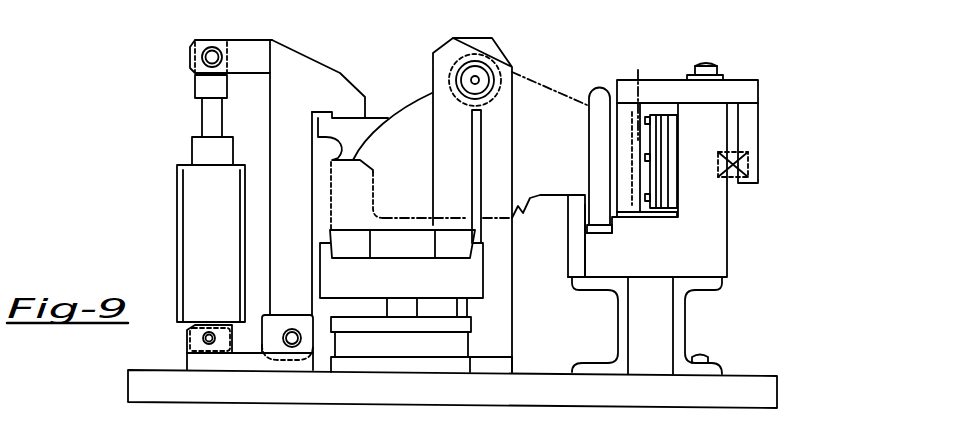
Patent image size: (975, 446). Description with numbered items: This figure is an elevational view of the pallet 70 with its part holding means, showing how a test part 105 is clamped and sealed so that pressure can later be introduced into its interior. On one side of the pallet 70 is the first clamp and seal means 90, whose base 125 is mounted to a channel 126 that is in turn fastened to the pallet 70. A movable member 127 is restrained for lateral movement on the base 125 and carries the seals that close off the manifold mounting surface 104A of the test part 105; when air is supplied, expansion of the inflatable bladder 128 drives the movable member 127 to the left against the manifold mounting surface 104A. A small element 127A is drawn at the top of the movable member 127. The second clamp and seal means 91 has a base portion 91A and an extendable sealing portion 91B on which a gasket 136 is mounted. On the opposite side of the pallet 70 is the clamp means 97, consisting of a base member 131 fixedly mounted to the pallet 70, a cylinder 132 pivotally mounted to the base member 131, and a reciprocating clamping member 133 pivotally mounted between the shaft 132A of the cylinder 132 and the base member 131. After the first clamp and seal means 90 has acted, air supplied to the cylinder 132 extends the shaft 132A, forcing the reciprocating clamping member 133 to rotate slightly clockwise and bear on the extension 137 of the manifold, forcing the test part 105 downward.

The pallet 70 is at (207, 393).
The clamp means 97 is at (192, 181).
The shaft 132A is at (200, 112).
The cylinder 132 is at (182, 241).
The base member 131 is at (185, 361).
The reciprocating clamping member 133 is at (302, 70).
The extension of the manifold 137 is at (357, 130).
The extendable sealing portion 91B is at (445, 291).
The gasket 136 is at (422, 322).
The second clamp and seal means 91 is at (391, 338).
The base portion 91A is at (460, 352).
The test part 105 is at (560, 107).
The first clamp and seal means 90 is at (677, 197).
The base 125 is at (713, 262).
The channel 126 is at (662, 335).
The movable member 127 is at (728, 87).
The adjusting knob 127A is at (707, 63).
The manifold mounting surface 104A is at (640, 95).
The inflatable bladder 128 is at (670, 187).